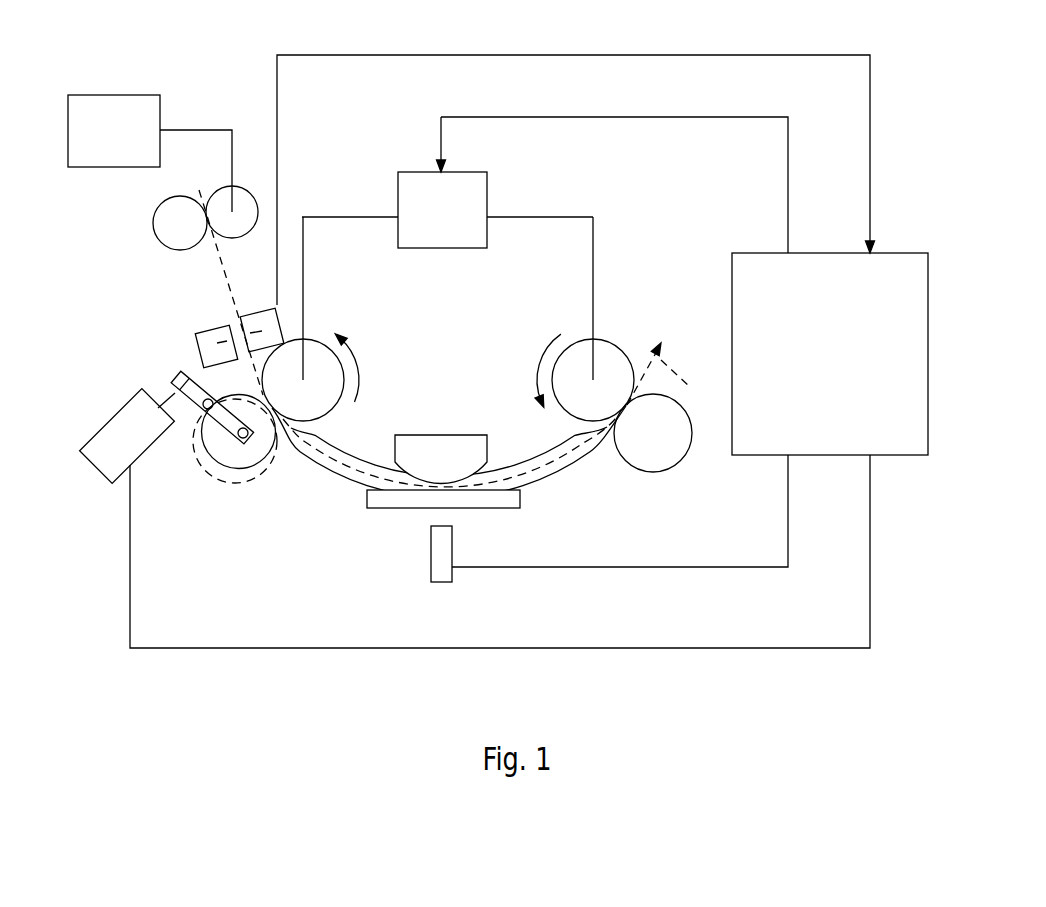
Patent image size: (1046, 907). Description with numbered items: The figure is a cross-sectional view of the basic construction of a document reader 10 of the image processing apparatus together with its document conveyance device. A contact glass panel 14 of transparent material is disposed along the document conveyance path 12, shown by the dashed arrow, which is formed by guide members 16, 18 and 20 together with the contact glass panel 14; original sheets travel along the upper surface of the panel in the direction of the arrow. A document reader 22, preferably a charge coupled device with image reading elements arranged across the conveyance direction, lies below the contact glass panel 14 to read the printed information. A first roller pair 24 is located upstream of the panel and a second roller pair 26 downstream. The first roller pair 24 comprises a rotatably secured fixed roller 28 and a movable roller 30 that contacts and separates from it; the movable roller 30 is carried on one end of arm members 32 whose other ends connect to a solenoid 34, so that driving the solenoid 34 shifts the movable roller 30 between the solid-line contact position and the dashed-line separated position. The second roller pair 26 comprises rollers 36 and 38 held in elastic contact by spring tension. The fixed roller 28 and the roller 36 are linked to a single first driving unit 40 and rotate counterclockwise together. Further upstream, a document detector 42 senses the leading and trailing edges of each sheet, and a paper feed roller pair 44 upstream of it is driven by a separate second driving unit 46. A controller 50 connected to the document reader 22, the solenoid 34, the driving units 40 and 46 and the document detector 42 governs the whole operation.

The document reader 10 is at (244, 126).
The document conveyance path 12 is at (670, 377).
The contact glass panel 14 is at (390, 507).
The guide member 16 is at (422, 433).
The guide member 18 is at (320, 472).
The guide member 20 is at (560, 475).
The document reader 22 is at (452, 582).
The first roller pair 24 is at (316, 330).
The second roller pair 26 is at (616, 330).
The fixed roller 28 is at (330, 410).
The movable roller 30 is at (270, 455).
The arm member 32 is at (180, 370).
The solenoid 34 is at (120, 405).
The roller 36 is at (582, 340).
The roller 38 is at (672, 472).
The first driving unit 40 is at (467, 248).
The document detector 42 is at (205, 327).
The paper feed roller pair 44 is at (160, 238).
The second driving unit 46 is at (93, 93).
The controller 50 is at (745, 252).